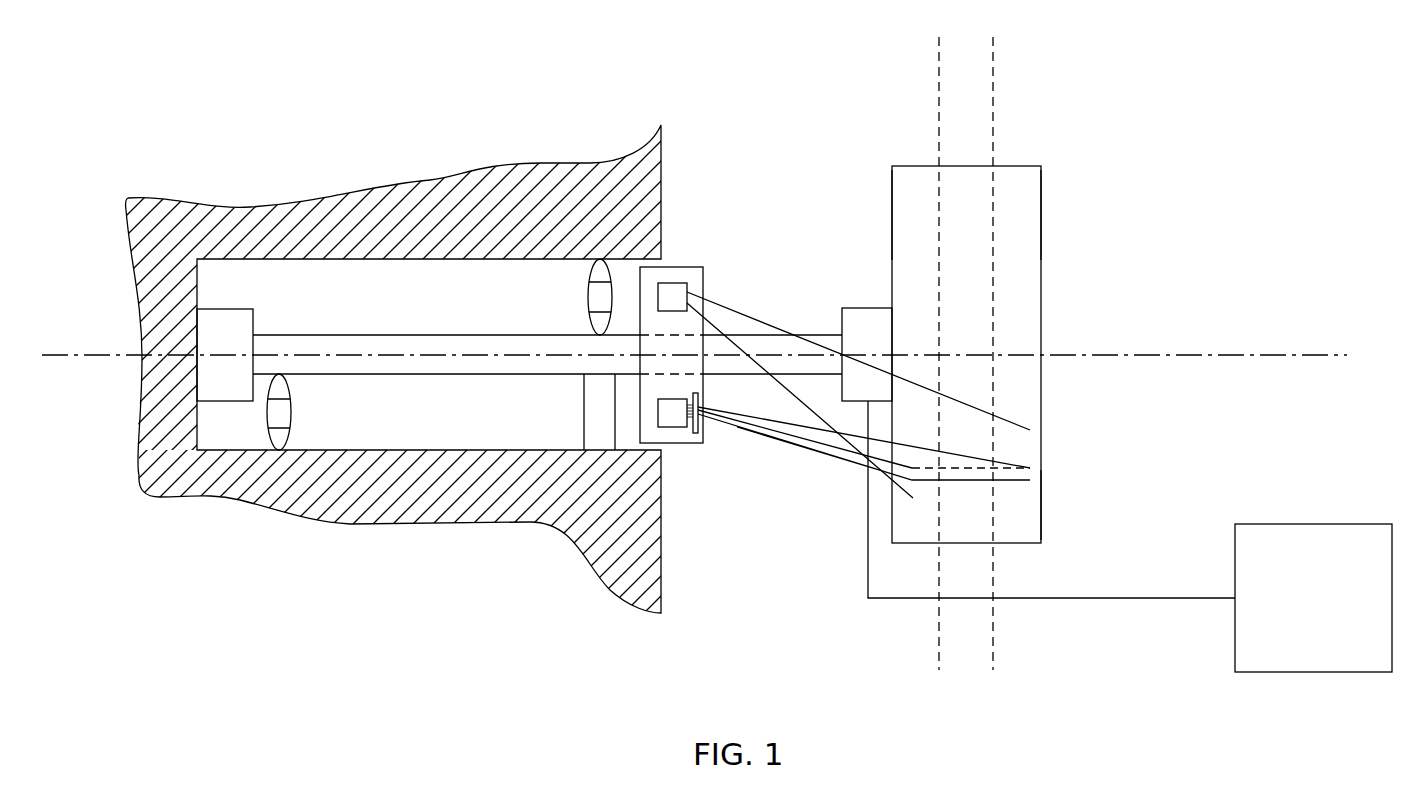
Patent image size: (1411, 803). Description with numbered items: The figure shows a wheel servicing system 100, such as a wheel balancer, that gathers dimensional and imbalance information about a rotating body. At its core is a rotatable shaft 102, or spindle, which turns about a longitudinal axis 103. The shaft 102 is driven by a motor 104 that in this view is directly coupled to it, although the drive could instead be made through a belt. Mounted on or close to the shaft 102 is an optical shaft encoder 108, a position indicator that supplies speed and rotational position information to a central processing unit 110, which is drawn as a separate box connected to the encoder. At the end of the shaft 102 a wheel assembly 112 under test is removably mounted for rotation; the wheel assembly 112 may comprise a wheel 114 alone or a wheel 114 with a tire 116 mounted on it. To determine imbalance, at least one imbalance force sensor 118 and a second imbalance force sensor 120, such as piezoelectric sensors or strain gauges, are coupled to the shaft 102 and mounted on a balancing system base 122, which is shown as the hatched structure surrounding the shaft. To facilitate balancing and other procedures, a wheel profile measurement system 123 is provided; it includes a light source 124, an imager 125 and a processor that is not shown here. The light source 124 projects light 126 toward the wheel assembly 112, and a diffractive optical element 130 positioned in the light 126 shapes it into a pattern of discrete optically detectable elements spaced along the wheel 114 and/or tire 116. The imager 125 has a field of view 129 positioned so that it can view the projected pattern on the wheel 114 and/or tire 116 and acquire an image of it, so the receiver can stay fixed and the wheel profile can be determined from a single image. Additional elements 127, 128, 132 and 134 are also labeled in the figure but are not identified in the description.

The wheel servicing system 100 is at (230, 78).
The shaft 102 is at (405, 334).
The longitudinal axis 103 is at (1202, 353).
The motor 104 is at (225, 309).
The optical shaft encoder 108 is at (868, 308).
The central processing unit 110 is at (1340, 607).
The wheel assembly 112 is at (1041, 498).
The wheel 114 is at (1042, 191).
The tire 116 is at (1013, 166).
The imbalance force sensor 118 is at (588, 298).
The imbalance force sensor 120 is at (293, 412).
The balancing system base 122 is at (465, 508).
The wheel profile measurement system 123 is at (720, 369).
The light source 124 is at (673, 427).
The imager 125 is at (666, 293).
The light 126 is at (802, 448).
The illuminated spot 127 is at (1020, 466).
The spacer 128 is at (583, 412).
The field of view 129 is at (1030, 430).
The diffractive optical element 130 is at (703, 432).
The side surface 132 is at (1042, 236).
The inner side surface 134 is at (890, 187).